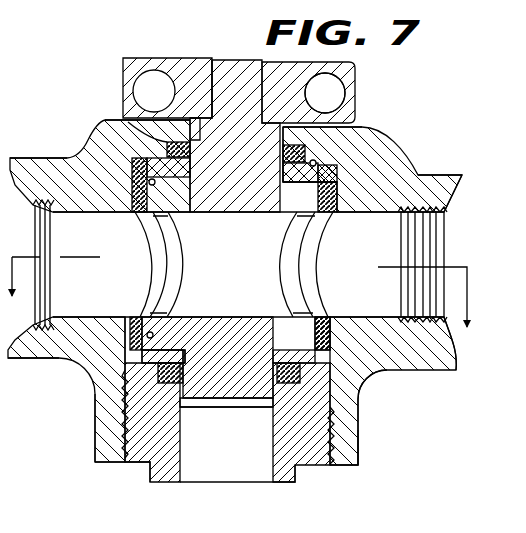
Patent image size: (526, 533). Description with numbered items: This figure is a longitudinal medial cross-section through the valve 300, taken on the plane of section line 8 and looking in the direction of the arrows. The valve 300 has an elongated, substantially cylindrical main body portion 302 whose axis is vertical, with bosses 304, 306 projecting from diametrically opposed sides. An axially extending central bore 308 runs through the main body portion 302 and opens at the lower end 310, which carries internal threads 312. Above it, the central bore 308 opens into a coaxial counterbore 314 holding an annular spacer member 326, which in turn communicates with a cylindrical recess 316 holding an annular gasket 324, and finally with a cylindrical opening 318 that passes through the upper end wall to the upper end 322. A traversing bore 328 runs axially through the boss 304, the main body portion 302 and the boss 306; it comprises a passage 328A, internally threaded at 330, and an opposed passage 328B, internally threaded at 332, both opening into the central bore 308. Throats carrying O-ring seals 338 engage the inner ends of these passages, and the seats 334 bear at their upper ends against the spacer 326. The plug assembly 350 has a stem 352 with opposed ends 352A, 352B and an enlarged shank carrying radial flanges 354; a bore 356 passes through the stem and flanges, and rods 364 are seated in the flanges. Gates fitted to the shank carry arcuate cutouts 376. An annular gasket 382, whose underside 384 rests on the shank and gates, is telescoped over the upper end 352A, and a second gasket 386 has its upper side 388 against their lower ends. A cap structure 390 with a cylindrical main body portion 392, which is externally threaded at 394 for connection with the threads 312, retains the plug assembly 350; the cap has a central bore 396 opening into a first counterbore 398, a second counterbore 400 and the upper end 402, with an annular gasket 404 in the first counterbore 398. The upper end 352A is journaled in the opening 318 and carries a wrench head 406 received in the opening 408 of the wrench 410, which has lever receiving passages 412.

The section line 8 is at (247, 292).
The valve 300 is at (88, 142).
The main body portion 302 is at (363, 147).
The boss 304 is at (66, 158).
The boss 306 is at (447, 176).
The central bore 308 is at (118, 407).
The lower end 310 is at (351, 467).
The internal threads 312 is at (128, 462).
The counterbore 314 is at (108, 128).
The cylindrical recess 316 is at (120, 117).
The cylindrical opening 318 is at (200, 140).
The upper end 322 is at (358, 127).
The annular gasket 324 is at (352, 135).
The annular spacer member 326 is at (301, 128).
The traversing bore 328 is at (248, 264).
The passage 328A is at (57, 360).
The passage 328B is at (400, 210).
The internal threads 330 is at (62, 389).
The internal threads 332 is at (425, 370).
The seats 334 is at (341, 323).
The O-ring seal 338 is at (334, 335).
The plug assembly 350 is at (140, 370).
The stem 352 is at (125, 432).
The upper end of stem 352A is at (303, 63).
The lower end of stem 352B is at (97, 455).
The radial flanges 354 is at (150, 216).
The bore 356 is at (296, 213).
The rods 364 is at (357, 178).
The arcuate cutout 376 is at (181, 252).
The annular gasket 382 is at (365, 142).
The underside of gasket 384 is at (345, 165).
The second gasket 386 is at (363, 417).
The upper side of second gasket 388 is at (268, 318).
The cap structure 390 is at (137, 466).
The main body portion of cap 392 is at (311, 468).
The threads 394 is at (333, 436).
The central bore of cap 396 is at (257, 404).
The first counterbore 398 is at (273, 410).
The second counterbore 400 is at (361, 407).
The upper end of cap 402 is at (360, 393).
The annular gasket 404 is at (125, 412).
The wrench head 406 is at (238, 60).
The opening of wrench 408 is at (222, 53).
The wrench 410 is at (162, 58).
The lever receiving passages 412 is at (346, 84).